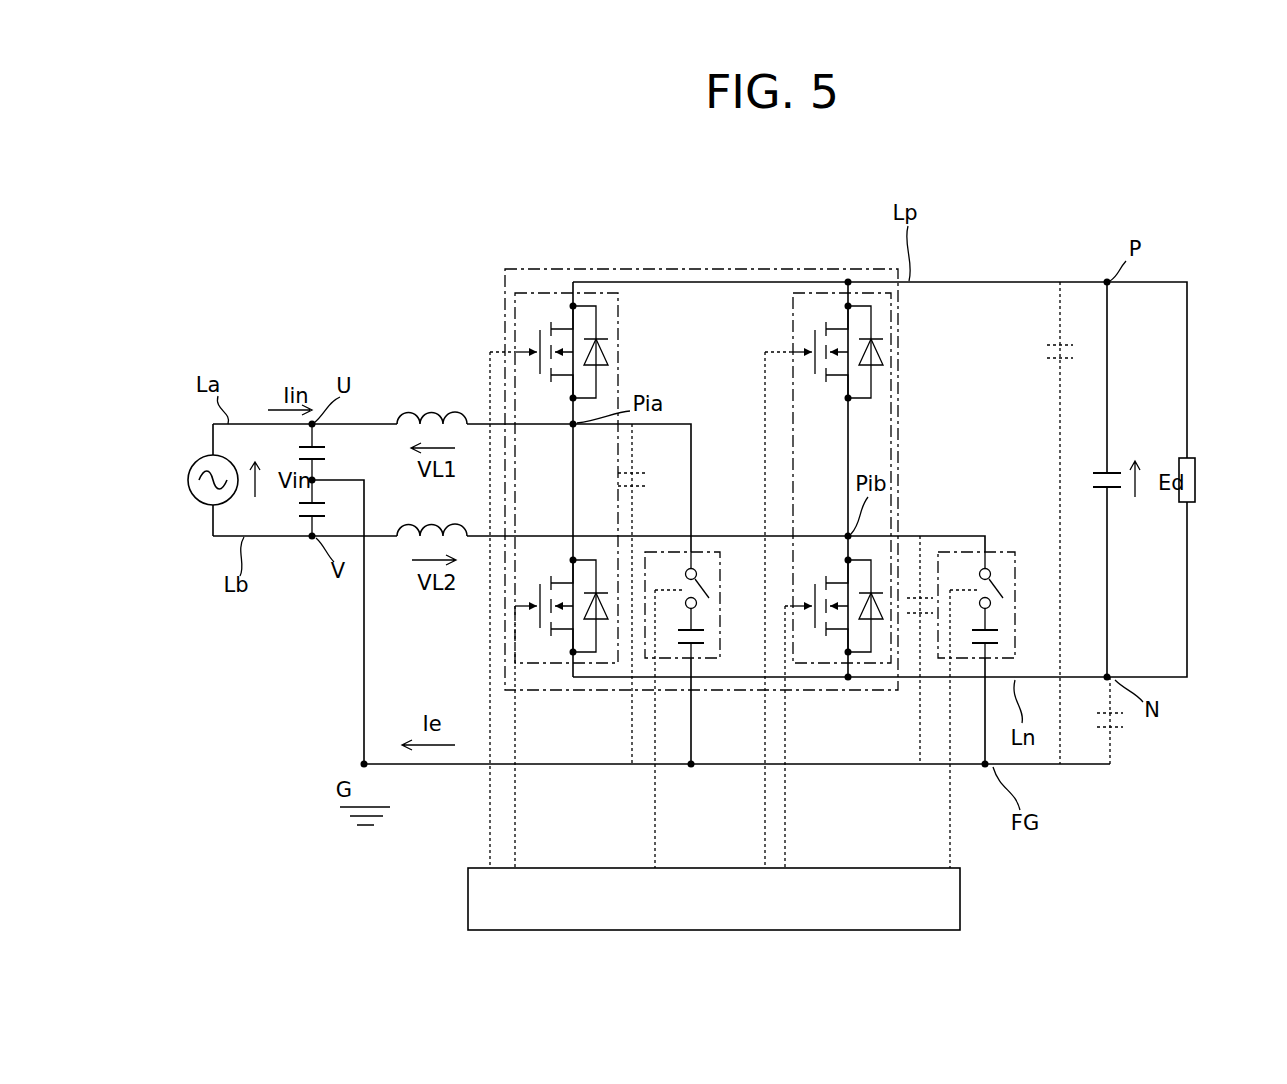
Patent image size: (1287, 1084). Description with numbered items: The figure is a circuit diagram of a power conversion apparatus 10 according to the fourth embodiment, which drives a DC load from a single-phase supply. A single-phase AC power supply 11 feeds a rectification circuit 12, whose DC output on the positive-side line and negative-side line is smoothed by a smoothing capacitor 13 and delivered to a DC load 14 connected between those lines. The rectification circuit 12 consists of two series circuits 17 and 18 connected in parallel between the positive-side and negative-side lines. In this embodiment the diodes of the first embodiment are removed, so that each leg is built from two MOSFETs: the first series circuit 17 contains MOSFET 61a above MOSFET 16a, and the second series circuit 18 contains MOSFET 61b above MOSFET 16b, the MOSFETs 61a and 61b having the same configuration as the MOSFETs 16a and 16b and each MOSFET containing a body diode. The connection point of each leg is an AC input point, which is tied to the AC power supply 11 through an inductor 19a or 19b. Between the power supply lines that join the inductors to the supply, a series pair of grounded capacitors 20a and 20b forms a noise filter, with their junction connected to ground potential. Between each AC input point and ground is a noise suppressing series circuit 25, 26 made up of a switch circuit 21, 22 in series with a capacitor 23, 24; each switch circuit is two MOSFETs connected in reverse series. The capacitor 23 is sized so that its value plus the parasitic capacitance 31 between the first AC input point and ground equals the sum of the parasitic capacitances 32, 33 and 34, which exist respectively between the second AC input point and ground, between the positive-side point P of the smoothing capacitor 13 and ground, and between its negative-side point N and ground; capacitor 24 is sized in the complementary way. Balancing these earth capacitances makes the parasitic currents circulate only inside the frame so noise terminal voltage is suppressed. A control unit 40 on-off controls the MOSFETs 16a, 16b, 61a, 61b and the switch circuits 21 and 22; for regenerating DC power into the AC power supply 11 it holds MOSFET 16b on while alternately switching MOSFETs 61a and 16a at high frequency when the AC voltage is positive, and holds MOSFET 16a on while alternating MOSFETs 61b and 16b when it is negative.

The power conversion apparatus 10 is at (361, 243).
The AC power supply 11 is at (190, 462).
The rectification circuit 12 is at (693, 268).
The smoothing capacitor 13 is at (1116, 470).
The DC load 14 is at (1196, 481).
The MOSFET 16a is at (555, 576).
The MOSFET 16b is at (831, 576).
The series circuit 17 is at (556, 292).
The series circuit 18 is at (829, 292).
The inductor 19a is at (441, 414).
The inductor 19b is at (448, 526).
The grounded capacitor 20a is at (323, 458).
The grounded capacitor 20b is at (304, 520).
The switch circuit 21 is at (706, 592).
The switch circuit 22 is at (1000, 593).
The capacitor 23 is at (705, 646).
The capacitor 24 is at (1000, 646).
The noise suppressing series circuit 25 is at (704, 551).
The noise suppressing series circuit 26 is at (998, 551).
The parasitic capacitance 31 is at (637, 472).
The parasitic capacitance 32 is at (922, 597).
The parasitic capacitance 33 is at (1050, 344).
The parasitic capacitance 34 is at (1118, 728).
The control unit 40 is at (962, 902).
The MOSFET 61a is at (541, 317).
The MOSFET 61b is at (818, 315).